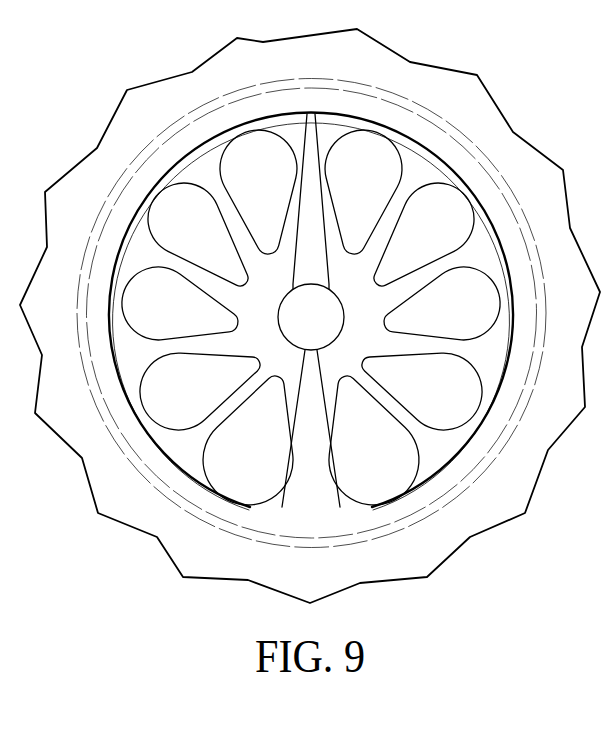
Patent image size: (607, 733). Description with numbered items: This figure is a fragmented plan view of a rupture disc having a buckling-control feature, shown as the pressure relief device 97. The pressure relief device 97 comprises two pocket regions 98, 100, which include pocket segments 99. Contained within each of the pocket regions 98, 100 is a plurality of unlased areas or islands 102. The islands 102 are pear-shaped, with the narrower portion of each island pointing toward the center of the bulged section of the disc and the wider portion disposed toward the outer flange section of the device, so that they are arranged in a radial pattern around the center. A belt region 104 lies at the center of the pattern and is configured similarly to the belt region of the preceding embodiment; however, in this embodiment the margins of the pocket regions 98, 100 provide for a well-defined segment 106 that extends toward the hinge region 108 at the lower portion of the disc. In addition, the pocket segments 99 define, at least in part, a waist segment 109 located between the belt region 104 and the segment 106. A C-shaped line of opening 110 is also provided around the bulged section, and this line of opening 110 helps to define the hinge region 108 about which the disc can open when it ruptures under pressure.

The pressure relief device 97 is at (532, 109).
The pocket region 98 is at (485, 253).
The pocket segments 99 is at (338, 368).
The pocket region 100 is at (141, 250).
The islands 102 is at (142, 303).
The belt region 104 is at (313, 307).
The segment 106 is at (312, 431).
The hinge region 108 is at (303, 512).
The waist segment 109 is at (320, 358).
The C-shaped line of opening 110 is at (444, 471).